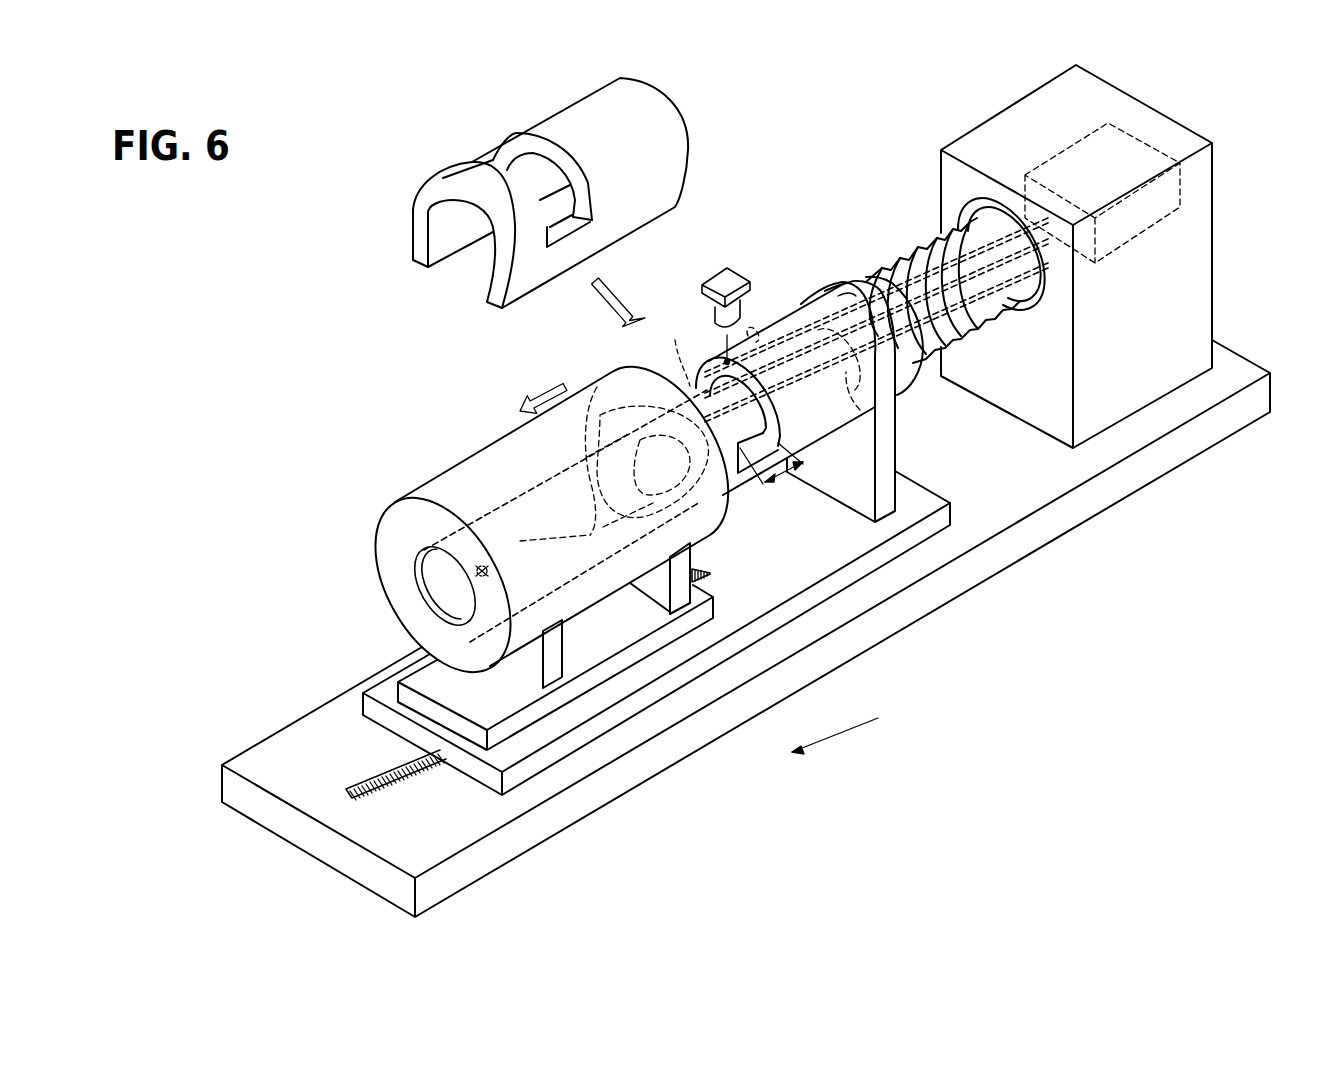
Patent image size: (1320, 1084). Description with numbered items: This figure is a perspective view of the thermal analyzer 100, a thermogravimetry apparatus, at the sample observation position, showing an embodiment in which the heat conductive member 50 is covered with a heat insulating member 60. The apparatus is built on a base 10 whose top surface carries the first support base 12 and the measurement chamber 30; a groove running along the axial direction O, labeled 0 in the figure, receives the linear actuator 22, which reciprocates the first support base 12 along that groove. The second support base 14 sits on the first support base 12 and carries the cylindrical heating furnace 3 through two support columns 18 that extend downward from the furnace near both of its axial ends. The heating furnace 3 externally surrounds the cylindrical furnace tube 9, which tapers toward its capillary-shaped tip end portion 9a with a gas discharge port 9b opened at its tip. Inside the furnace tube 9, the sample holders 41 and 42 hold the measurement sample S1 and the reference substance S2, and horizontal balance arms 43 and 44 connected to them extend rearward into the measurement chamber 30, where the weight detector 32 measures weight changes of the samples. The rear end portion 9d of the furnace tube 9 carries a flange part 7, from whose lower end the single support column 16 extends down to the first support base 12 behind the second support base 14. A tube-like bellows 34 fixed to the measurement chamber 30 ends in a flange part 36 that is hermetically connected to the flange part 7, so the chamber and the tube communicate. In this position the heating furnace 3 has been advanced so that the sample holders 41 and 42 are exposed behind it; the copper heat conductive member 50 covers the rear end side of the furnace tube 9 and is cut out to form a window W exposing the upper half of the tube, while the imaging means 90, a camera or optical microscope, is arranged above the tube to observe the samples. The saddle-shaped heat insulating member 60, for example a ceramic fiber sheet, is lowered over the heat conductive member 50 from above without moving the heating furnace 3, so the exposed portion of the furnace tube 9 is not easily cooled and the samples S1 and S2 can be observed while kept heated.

The heating furnace 3 is at (580, 392).
The flange part 7 is at (830, 292).
The furnace tube 9 is at (560, 527).
The tip end portion 9a is at (480, 562).
The gas discharge port 9b is at (476, 566).
The rear end portion 9d is at (762, 345).
The base 10 is at (962, 583).
The first support base 12 is at (540, 768).
The second support base 14 is at (478, 740).
The support column 16 is at (897, 495).
The support columns 18 is at (556, 655).
The linear actuator 22 is at (364, 790).
The measurement chamber 30 is at (1200, 282).
The weight detector 32 is at (1180, 190).
The bellows 34 is at (1000, 312).
The flange part 36 is at (851, 282).
The sample holder 41 is at (678, 410).
The sample holder 42 is at (652, 462).
The balance arm 43 is at (750, 335).
The balance arm 44 is at (860, 410).
The heat conductive member 50 is at (826, 436).
The heat insulating member 60 is at (688, 135).
The imaging means 90 is at (716, 281).
The thermal analyzer 100 is at (746, 628).
The window W is at (790, 478).
The measurement sample S1 is at (675, 347).
The reference substance S2 is at (711, 343).
The axial direction 0 is at (835, 745).